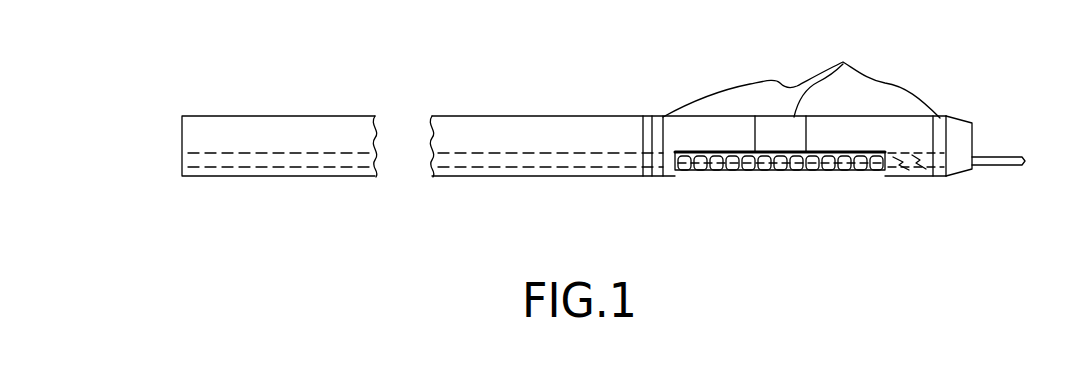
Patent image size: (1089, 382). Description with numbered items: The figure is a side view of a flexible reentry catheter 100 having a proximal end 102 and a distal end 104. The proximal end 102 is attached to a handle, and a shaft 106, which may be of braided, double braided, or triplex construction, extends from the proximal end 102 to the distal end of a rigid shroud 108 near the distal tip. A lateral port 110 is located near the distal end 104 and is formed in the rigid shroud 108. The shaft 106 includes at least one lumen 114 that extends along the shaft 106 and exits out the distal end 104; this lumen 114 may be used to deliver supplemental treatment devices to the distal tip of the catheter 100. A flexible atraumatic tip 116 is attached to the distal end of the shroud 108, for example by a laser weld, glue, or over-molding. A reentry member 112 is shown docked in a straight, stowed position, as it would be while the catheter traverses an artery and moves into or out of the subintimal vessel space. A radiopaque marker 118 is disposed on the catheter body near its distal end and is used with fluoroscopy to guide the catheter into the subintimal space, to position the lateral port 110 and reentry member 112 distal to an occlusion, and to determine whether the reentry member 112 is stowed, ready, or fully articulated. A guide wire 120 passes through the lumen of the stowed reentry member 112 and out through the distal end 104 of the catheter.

The catheter 100 is at (758, 68).
The proximal end 102 is at (182, 147).
The distal end 104 is at (960, 118).
The shaft 106 is at (318, 177).
The rigid shroud 108 is at (856, 119).
The lateral port 110 is at (674, 172).
The reentry member 112 is at (829, 171).
The lumen 114 is at (545, 165).
The flexible atraumatic tip 116 is at (954, 176).
The radiopaque marker 118 is at (801, 76).
The guide wire 120 is at (1001, 166).